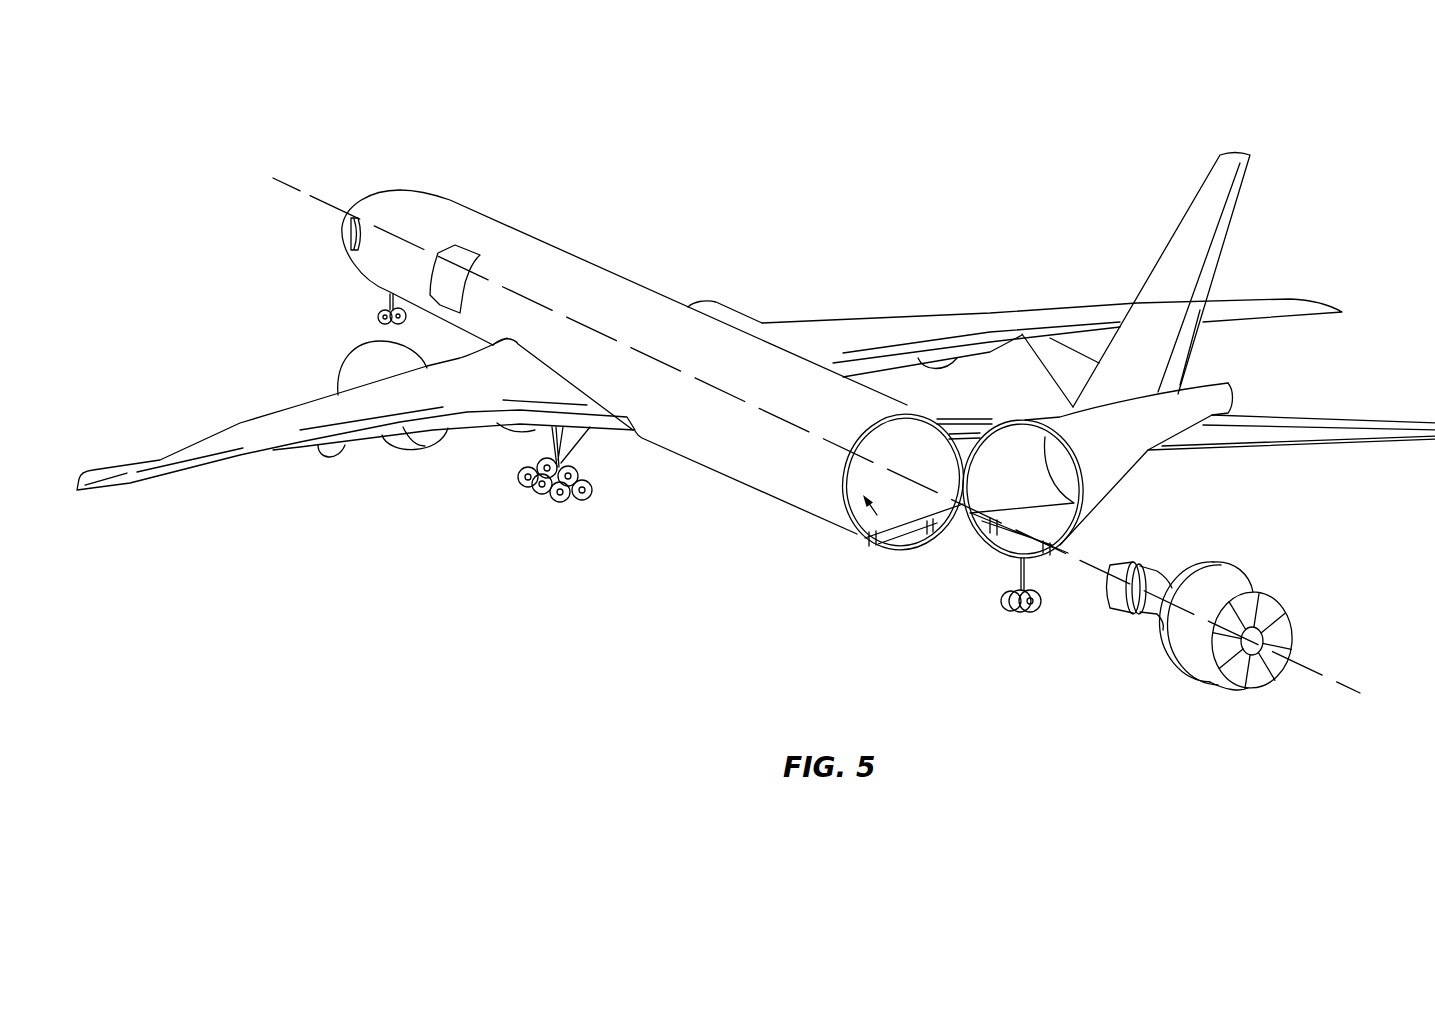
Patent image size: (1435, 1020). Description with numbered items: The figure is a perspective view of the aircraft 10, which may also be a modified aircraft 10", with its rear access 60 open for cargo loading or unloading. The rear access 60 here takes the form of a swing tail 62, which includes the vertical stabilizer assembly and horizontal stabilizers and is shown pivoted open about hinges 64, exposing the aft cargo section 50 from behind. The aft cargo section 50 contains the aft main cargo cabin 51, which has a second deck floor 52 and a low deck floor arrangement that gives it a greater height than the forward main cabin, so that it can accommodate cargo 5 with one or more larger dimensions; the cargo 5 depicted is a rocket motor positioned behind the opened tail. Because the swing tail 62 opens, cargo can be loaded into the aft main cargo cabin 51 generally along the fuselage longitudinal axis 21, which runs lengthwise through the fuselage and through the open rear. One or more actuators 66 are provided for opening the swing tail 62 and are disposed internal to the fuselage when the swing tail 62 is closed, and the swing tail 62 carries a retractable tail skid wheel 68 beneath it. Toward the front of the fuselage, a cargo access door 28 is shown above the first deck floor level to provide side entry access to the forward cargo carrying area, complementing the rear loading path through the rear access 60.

The aircraft 10 is at (572, 195).
The fuselage longitudinal axis 21 is at (290, 186).
The cargo access door 28 is at (452, 252).
The aft cargo section 50 is at (781, 466).
The aft main cargo cabin 51 is at (870, 547).
The second deck floor 52 is at (888, 516).
The hinges 64 is at (966, 513).
The actuators 66 is at (964, 418).
The swing tail 62 is at (1118, 477).
The rear access 60 is at (1342, 386).
The retractable tail skid wheel 68 is at (1034, 607).
The cargo 5 is at (1255, 582).